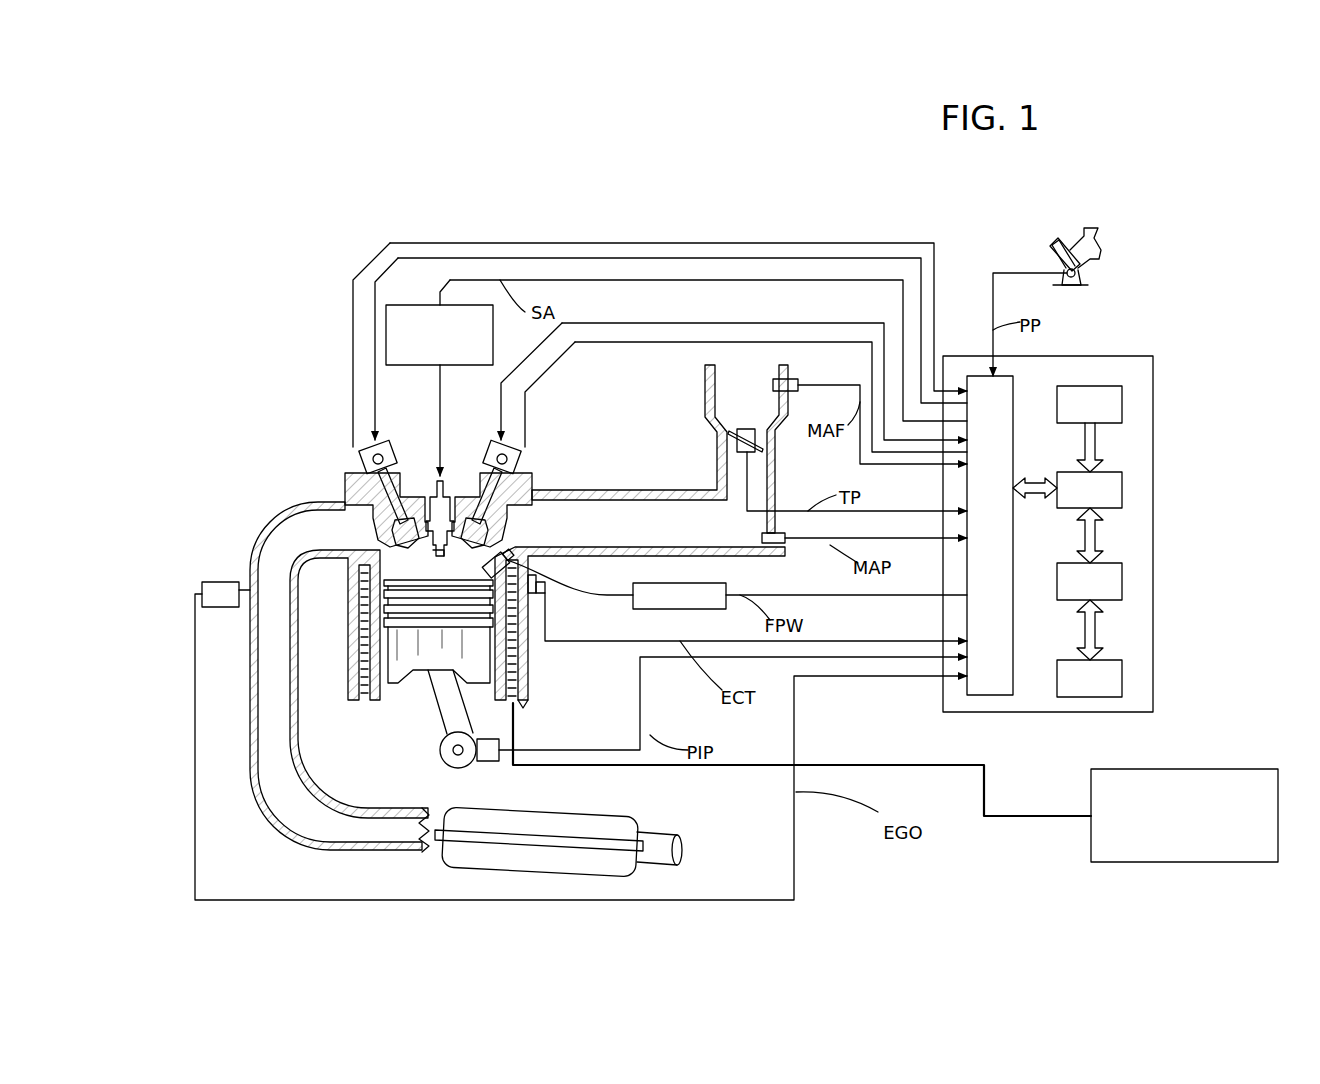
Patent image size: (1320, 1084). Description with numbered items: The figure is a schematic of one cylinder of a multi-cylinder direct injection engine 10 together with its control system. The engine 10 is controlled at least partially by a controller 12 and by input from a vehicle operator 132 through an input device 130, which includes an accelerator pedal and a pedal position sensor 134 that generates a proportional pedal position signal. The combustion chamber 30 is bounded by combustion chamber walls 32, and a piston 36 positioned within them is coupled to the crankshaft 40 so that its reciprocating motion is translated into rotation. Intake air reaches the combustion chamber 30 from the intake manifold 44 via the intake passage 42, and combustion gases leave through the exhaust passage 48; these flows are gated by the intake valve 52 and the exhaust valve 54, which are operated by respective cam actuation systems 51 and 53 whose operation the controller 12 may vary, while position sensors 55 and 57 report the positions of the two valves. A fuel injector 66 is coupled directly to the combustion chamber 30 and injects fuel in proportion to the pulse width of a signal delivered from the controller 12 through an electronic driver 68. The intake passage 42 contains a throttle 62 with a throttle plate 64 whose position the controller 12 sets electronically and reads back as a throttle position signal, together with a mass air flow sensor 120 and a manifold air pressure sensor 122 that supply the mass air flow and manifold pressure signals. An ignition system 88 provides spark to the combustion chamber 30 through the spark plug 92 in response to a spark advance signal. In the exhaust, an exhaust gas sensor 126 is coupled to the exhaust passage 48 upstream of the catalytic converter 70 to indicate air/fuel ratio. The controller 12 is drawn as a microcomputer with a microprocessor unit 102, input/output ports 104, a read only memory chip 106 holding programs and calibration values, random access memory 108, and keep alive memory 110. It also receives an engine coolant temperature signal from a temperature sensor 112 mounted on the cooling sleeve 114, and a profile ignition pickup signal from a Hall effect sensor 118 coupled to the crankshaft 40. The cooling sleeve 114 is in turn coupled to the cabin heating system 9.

The cabin heating system 9 is at (1200, 769).
The engine 10 is at (287, 432).
The controller 12 is at (1153, 358).
The combustion chamber 30 is at (437, 565).
The combustion chamber walls 32 is at (387, 690).
The piston 36 is at (422, 657).
The crankshaft 40 is at (446, 766).
The intake passage 42 is at (660, 449).
The intake manifold 44 is at (640, 610).
The exhaust passage 48 is at (339, 677).
The cam actuation system 51 is at (496, 440).
The intake valve 52 is at (480, 535).
The cam actuation system 53 is at (384, 440).
The exhaust valve 54 is at (394, 538).
The position sensor 55 is at (514, 460).
The position sensor 57 is at (366, 456).
The throttle 62 is at (757, 436).
The throttle plate 64 is at (736, 440).
The fuel injector 66 is at (520, 558).
The electronic driver 68 is at (650, 609).
The catalytic converter 70 is at (600, 813).
The ignition system 88 is at (400, 305).
The spark plug 92 is at (445, 495).
The microprocessor unit 102 is at (1122, 492).
The input/output ports 104 is at (1020, 382).
The read only memory chip 106 is at (1122, 405).
The random access memory 108 is at (1122, 588).
The keep alive memory 110 is at (1122, 680).
The temperature sensor 112 is at (540, 588).
The cooling sleeve 114 is at (510, 655).
The Hall effect sensor 118 is at (490, 762).
The mass air flow sensor 120 is at (797, 380).
The manifold air pressure sensor 122 is at (778, 544).
The exhaust gas sensor 126 is at (203, 590).
The input device 130 is at (1055, 249).
The vehicle operator 132 is at (1097, 240).
The pedal position sensor 134 is at (1083, 275).